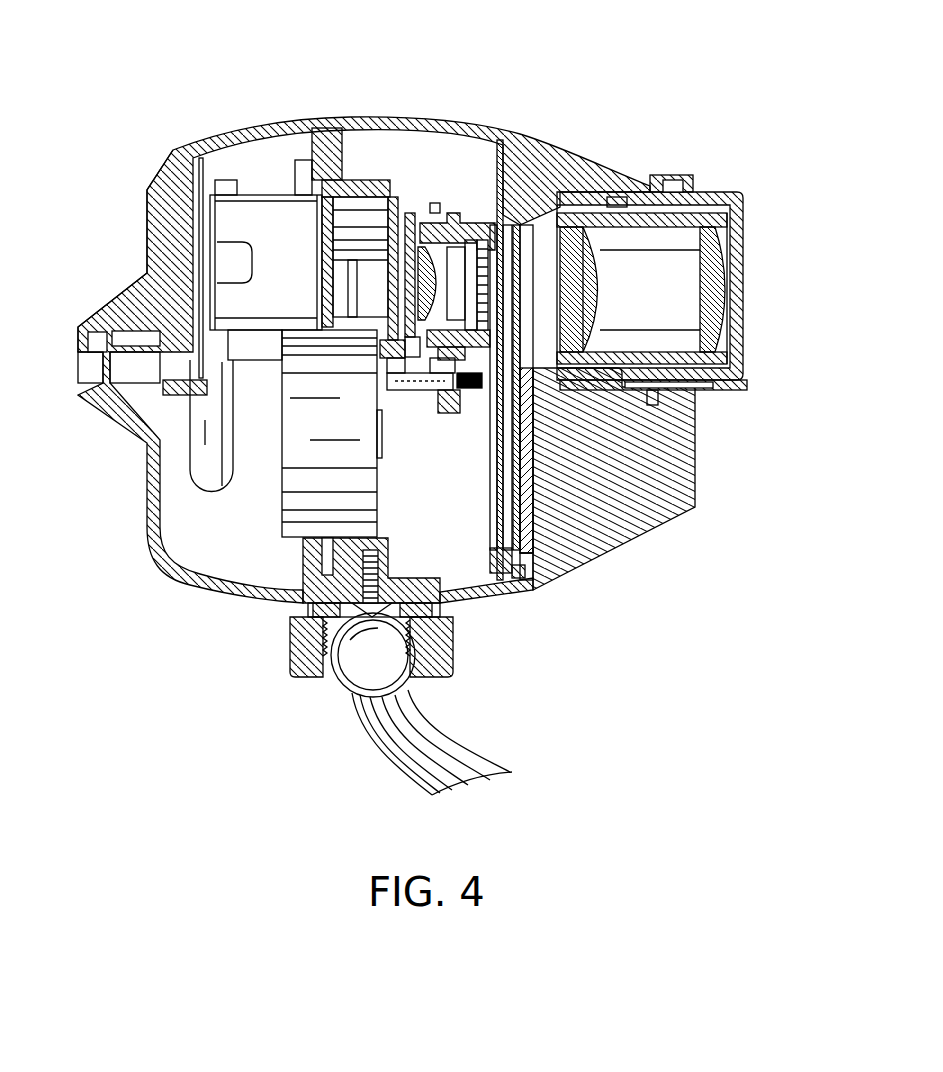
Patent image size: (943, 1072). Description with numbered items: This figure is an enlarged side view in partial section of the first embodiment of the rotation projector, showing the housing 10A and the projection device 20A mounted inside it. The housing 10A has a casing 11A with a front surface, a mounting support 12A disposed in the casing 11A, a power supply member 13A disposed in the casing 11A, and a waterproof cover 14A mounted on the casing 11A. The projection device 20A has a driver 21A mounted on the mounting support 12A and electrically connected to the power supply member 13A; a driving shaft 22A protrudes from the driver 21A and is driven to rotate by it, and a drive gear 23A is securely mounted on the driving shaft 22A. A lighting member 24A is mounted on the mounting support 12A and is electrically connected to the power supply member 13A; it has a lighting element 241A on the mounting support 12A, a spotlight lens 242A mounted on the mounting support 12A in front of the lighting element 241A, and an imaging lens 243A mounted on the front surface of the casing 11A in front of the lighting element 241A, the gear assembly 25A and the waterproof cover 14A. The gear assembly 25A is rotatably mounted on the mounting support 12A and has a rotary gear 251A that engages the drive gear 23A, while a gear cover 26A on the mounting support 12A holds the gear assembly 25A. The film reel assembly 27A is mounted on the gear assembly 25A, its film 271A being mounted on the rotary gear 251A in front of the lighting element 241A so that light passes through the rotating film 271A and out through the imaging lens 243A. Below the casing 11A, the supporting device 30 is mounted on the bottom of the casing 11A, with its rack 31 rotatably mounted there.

The housing 10A is at (296, 112).
The casing 11A is at (168, 172).
The mounting support 12A is at (371, 180).
The power supply member 13A is at (277, 212).
The waterproof cover 14A is at (522, 452).
The projection device 20A is at (273, 483).
The driver 21A is at (293, 517).
The driving shaft 22A is at (403, 385).
The drive gear 23A is at (450, 407).
The lighting member 24A is at (403, 183).
The lighting element 241A is at (400, 287).
The spotlight lens 242A is at (428, 277).
The imaging lens 243A is at (720, 197).
The gear assembly 25A is at (487, 380).
The rotary gear 251A is at (470, 358).
The gear cover 26A is at (480, 250).
The film reel assembly 27A is at (495, 272).
The film 271A is at (473, 302).
The supporting device 30 is at (457, 713).
The rack 31 is at (448, 760).